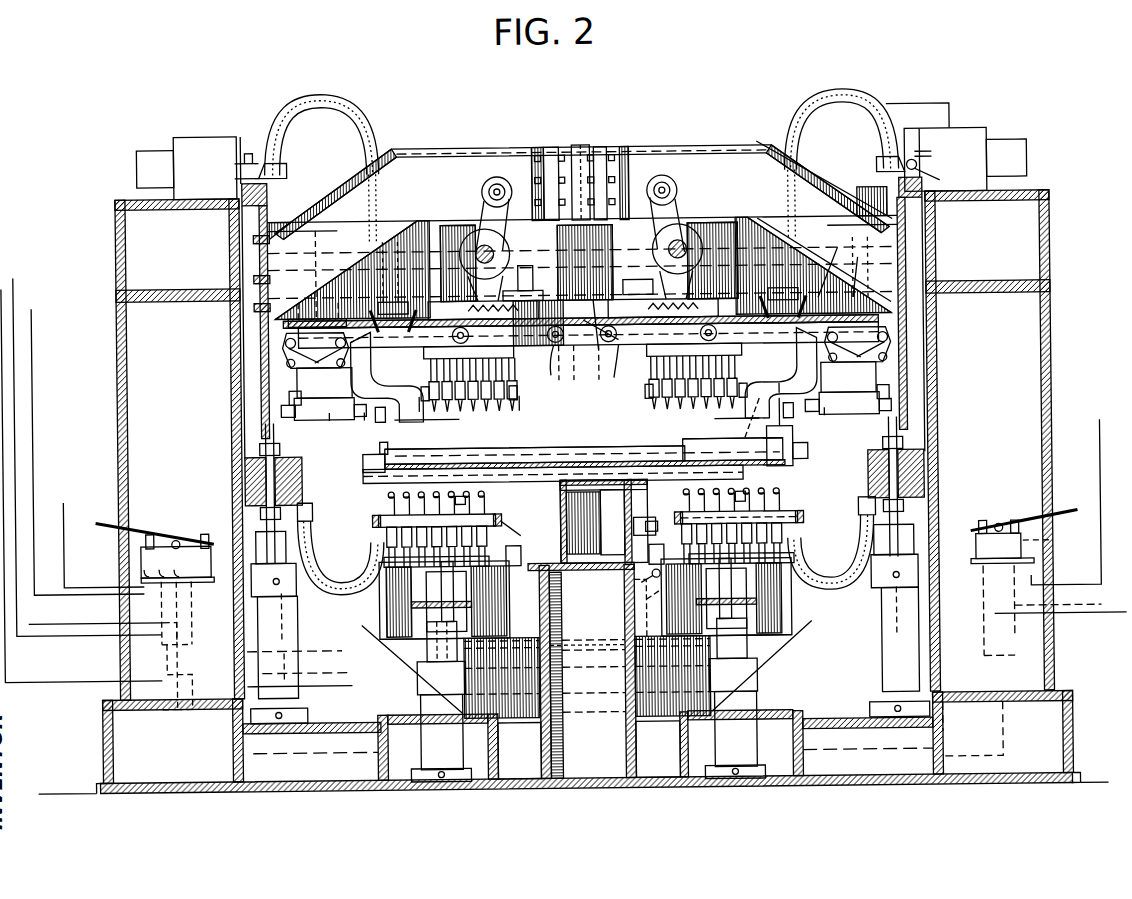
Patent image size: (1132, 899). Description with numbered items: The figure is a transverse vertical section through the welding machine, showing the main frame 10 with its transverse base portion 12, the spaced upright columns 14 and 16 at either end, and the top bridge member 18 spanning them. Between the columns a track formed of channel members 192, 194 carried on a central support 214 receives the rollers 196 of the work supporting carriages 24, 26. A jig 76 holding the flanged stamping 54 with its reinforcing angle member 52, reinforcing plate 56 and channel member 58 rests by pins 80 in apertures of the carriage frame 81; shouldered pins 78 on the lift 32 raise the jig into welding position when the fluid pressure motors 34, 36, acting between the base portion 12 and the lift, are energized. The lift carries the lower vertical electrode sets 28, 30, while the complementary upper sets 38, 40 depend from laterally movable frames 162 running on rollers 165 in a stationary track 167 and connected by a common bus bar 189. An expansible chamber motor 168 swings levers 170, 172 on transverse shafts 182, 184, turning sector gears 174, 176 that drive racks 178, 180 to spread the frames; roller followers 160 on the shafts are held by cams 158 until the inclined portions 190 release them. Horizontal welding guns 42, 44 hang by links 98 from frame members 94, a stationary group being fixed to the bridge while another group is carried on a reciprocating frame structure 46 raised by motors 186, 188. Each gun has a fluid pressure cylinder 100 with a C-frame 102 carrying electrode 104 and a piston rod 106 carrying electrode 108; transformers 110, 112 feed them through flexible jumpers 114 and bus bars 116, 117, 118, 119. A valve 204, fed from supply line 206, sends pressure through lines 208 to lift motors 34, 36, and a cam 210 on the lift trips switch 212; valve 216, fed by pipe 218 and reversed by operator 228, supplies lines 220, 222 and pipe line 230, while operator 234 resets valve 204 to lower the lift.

The main frame 10 is at (1077, 763).
The transverse base portion 12 is at (760, 785).
The upright column 14 is at (118, 389).
The upright column 16 is at (1052, 378).
The top bridge member 18 is at (862, 195).
The work supporting carriage 24 is at (572, 533).
The work supporting carriage 26 is at (512, 505).
The set of electrodes 28 is at (385, 493).
The set of electrodes 30 is at (690, 510).
The lift 32 is at (785, 622).
The fluid pressure motor 34 is at (418, 703).
The fluid pressure motor 36 is at (755, 703).
The set of electrodes 38 is at (500, 375).
The set of electrodes 40 is at (660, 356).
The welding gun 42 is at (392, 418).
The welding gun 44 is at (832, 422).
The frame structure 46 is at (740, 140).
The reinforcing angle member 52 is at (475, 447).
The flanged stamping 54 is at (420, 447).
The reinforcing plate 56 is at (450, 440).
The channel member 58 is at (376, 448).
The jig 76 is at (374, 468).
The shouldered pin 78 is at (400, 500).
The pin 80 is at (462, 482).
The frame 81 is at (655, 488).
The frame member 94 is at (320, 300).
The link 98 is at (338, 350).
The fluid pressure cylinder 100 is at (312, 412).
The C-frame 102 is at (310, 390).
The welding electrode 104 is at (440, 414).
The piston rod 106 is at (338, 418).
The welding electrode 108 is at (365, 420).
The transformer 110 is at (183, 140).
The transformer 112 is at (968, 132).
The flexible jumper 114 is at (345, 103).
The bus bar 116 is at (360, 272).
The bus bar 117 is at (392, 300).
The bus bar 118 is at (776, 290).
The bus bar 119 is at (822, 275).
The cam 158 is at (528, 160).
The roller follower 160 is at (492, 182).
The laterally movable frame 162 is at (435, 332).
The roller 165 is at (572, 345).
The stationary track 167 is at (578, 372).
The expansible chamber motor 168 is at (584, 147).
The lever 170 is at (630, 262).
The lever 172 is at (528, 292).
The sector gear 174 is at (640, 282).
The sector gear 176 is at (440, 222).
The rack 178 is at (630, 368).
The rack 180 is at (544, 360).
The transverse shaft 182 is at (720, 212).
The transverse shaft 184 is at (485, 225).
The expansible chamber motor 186 is at (306, 712).
The expansible chamber motor 188 is at (867, 712).
The common bus bar 189 is at (522, 400).
The inclined portion 190 is at (610, 350).
The channel member 192 is at (528, 552).
The channel member 194 is at (612, 580).
The roller 196 is at (852, 275).
The valve 204 is at (1000, 530).
The fluid pressure supply line 206 is at (1086, 616).
The fluid pressure line 208 is at (1015, 736).
The cam 210 is at (625, 665).
The cam operated switch 212 is at (625, 642).
The central support 214 is at (562, 622).
The manually actuated valve 216 is at (163, 530).
The supply pipe 218 is at (96, 620).
The supply line 220 is at (360, 695).
The supply line 222 is at (360, 648).
The fluid pressure operator 228 is at (140, 571).
The pipe line 230 is at (44, 632).
The fluid pressure operator 234 is at (1050, 555).